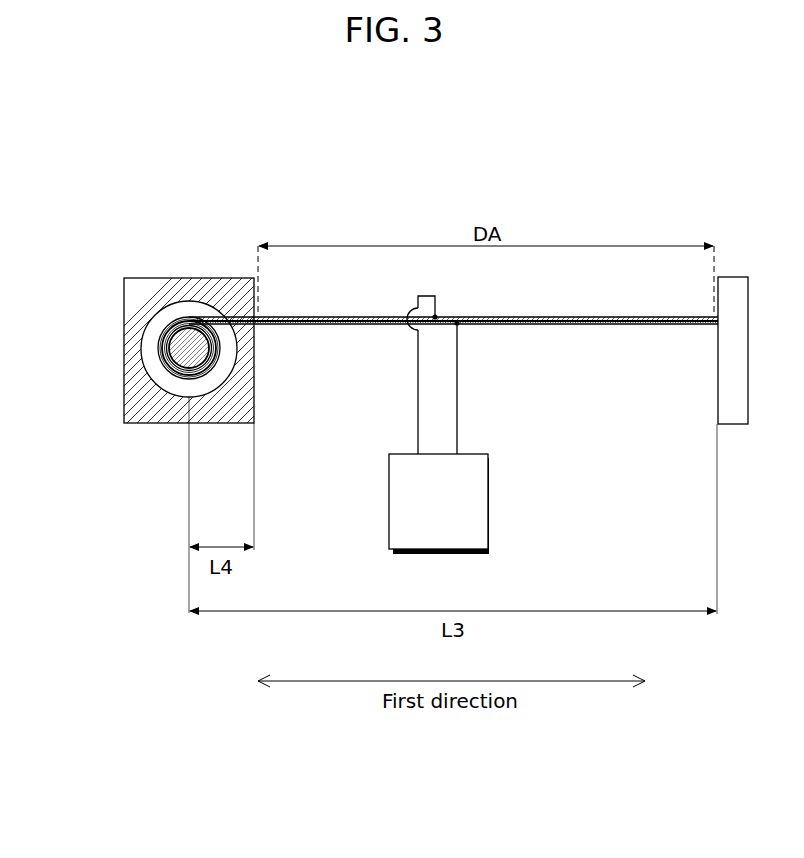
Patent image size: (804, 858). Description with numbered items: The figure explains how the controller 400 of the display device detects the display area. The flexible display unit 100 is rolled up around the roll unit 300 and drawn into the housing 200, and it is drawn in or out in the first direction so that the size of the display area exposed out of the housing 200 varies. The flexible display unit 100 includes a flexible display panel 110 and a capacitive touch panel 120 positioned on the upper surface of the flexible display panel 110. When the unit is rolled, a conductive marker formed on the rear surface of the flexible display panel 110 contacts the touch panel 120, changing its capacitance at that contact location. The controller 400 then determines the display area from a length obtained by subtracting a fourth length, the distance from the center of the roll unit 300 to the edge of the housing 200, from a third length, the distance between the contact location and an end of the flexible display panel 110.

The flexible display unit 100 is at (455, 371).
The flexible display panel 110 is at (560, 326).
The touch panel 120 is at (547, 386).
The housing 200 is at (151, 290).
The roll unit 300 is at (178, 348).
The controller 400 is at (389, 503).